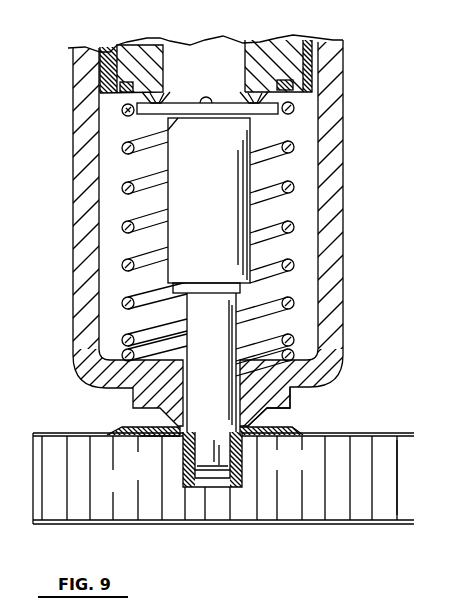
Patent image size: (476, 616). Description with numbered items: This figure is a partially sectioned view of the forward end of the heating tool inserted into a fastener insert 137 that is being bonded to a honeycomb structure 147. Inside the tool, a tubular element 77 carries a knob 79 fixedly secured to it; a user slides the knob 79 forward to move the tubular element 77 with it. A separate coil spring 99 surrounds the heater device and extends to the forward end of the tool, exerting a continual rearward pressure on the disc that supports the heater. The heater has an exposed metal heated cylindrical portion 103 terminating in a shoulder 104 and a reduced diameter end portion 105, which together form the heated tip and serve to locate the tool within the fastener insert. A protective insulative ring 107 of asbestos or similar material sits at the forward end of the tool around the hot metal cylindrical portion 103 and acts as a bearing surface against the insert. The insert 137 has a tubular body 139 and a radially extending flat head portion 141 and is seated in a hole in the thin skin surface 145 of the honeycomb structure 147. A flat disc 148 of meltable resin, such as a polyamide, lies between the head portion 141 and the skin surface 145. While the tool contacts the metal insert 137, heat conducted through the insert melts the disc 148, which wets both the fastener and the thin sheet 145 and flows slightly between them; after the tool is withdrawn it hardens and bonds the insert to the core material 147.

The tubular element 77 is at (300, 63).
The coil spring 99 is at (298, 138).
The knob 79 is at (262, 222).
The protective insulative ring 107 is at (140, 388).
The heated cylindrical portion 103 is at (290, 383).
The head portion 141 is at (266, 421).
The flat disc 148 is at (110, 432).
The insert 137 is at (153, 436).
The tubular body 139 is at (180, 467).
The shoulder 104 is at (213, 441).
The reduced diameter end portion 105 is at (215, 470).
The skin surface 145 is at (397, 432).
The honeycomb structure 147 is at (400, 472).